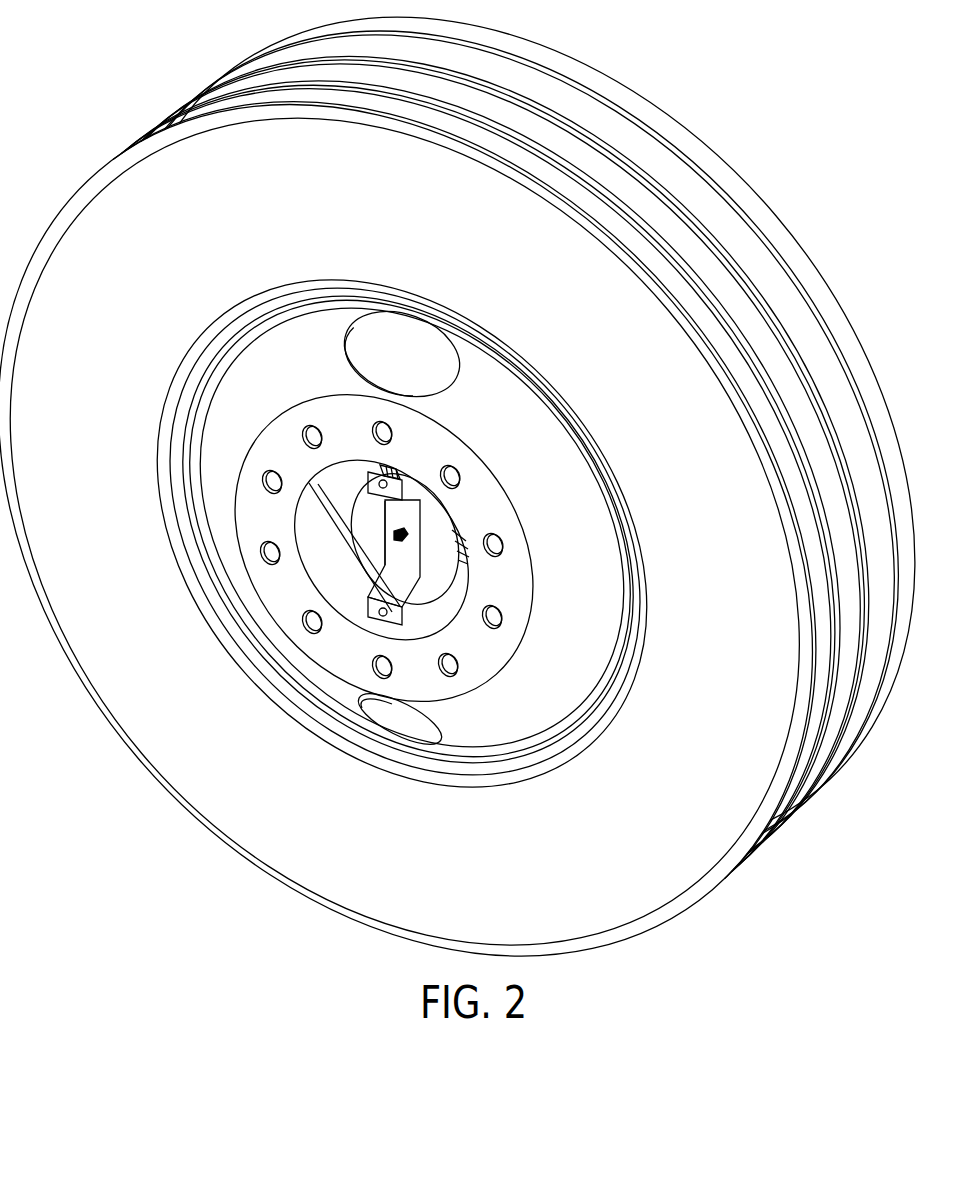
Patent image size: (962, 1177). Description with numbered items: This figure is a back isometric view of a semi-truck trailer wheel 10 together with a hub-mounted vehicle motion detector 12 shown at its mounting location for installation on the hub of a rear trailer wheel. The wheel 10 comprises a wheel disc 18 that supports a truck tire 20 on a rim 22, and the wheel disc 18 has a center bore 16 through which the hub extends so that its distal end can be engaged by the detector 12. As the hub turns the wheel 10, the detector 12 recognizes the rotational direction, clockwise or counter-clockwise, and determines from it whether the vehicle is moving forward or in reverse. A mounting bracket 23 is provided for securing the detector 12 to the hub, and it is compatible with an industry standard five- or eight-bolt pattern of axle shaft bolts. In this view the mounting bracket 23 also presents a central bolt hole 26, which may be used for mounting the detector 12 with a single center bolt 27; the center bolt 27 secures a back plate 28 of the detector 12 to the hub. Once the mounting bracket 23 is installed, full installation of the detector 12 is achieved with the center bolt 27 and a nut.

The semi-truck trailer wheel 10 is at (88, 90).
The hub-mounted vehicle motion detector 12 is at (360, 541).
The center bore 16 is at (345, 462).
The wheel disc 18 is at (584, 636).
The truck tire 20 is at (818, 276).
The rim 22 is at (349, 735).
The mounting bracket 23 is at (414, 518).
The central bolt hole 26 is at (397, 531).
The center bolt 27 is at (408, 537).
The back plate 28 is at (436, 575).